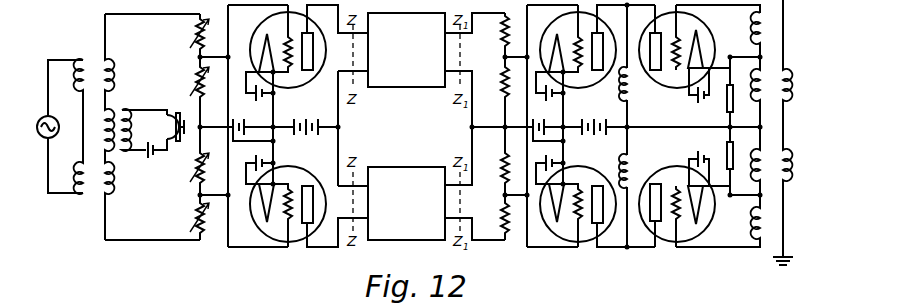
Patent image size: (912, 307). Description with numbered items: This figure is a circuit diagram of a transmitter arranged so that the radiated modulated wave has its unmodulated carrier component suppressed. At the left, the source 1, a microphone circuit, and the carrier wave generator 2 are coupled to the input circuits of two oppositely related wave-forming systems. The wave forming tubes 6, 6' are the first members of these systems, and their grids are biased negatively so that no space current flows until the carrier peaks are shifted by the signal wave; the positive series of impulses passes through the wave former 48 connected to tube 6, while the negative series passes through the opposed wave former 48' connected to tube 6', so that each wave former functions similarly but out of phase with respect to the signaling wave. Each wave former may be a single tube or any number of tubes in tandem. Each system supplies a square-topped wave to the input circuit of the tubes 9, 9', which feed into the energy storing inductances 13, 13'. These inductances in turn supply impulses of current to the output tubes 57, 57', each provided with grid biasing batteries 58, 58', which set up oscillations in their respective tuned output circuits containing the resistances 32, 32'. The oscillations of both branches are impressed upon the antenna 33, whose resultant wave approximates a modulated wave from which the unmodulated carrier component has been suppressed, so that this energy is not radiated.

The source 1 is at (150, 110).
The carrier wave generator 2 is at (40, 118).
The wave forming tube 6 is at (309, 56).
The wave forming tube 6' is at (309, 198).
The wave former 48 is at (406, 65).
The wave former 48' is at (406, 190).
The tube 9 is at (597, 56).
The tube 9' is at (597, 197).
The energy storing inductance 13 is at (639, 90).
The energy storing inductance 13' is at (641, 166).
The output tube 57 is at (693, 46).
The output tube 57' is at (693, 206).
The grid biasing battery 58 is at (696, 93).
The grid biasing battery 58' is at (698, 156).
The tuned output circuit 32 is at (743, 92).
The tuned output circuit 32' is at (744, 162).
The antenna 33 is at (783, 51).